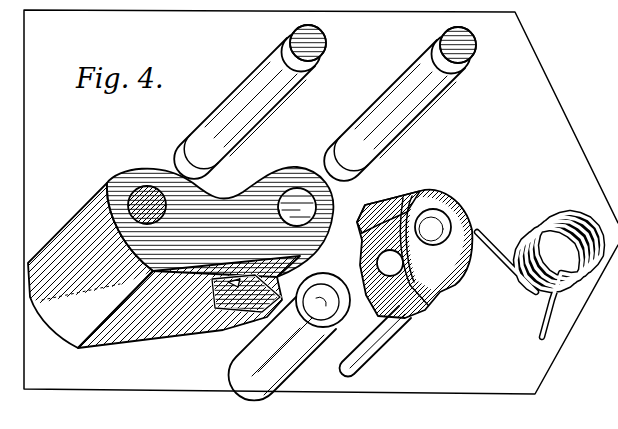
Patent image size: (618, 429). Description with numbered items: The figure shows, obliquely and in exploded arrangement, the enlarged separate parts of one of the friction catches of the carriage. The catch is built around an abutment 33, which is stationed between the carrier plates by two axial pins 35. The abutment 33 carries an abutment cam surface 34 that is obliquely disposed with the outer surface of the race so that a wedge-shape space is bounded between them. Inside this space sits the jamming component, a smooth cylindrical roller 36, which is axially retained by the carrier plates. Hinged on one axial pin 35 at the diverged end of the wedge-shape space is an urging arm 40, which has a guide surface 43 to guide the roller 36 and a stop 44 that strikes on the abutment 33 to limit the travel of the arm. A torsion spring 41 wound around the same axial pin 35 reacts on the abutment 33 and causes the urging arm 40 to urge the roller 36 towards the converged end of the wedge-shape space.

The abutment 33 is at (138, 177).
The abutment cam surface 34 is at (147, 322).
The axial pins 35 is at (263, 97).
The smooth cylindrical roller 36 is at (253, 353).
The urging arm 40 is at (447, 188).
The torsion spring 41 is at (553, 212).
The guide surface 43 is at (347, 362).
The stop 44 is at (358, 232).